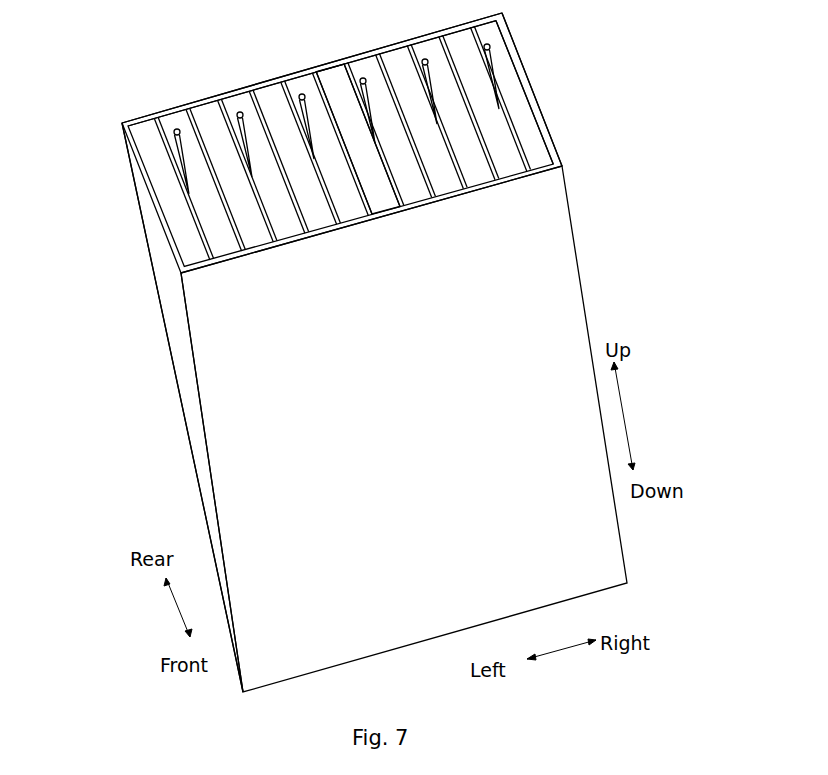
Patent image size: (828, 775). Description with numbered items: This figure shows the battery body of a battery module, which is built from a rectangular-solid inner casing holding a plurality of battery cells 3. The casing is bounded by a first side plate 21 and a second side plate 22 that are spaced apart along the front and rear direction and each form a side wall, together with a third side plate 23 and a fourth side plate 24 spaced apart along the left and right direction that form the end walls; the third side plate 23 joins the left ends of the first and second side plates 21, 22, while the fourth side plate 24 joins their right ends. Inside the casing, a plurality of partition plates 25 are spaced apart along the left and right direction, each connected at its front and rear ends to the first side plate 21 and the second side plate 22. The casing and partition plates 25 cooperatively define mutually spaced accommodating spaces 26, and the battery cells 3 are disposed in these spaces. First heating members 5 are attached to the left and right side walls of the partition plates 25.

The first side plate 21 is at (443, 603).
The second side plate 22 is at (143, 112).
The third side plate 23 is at (145, 215).
The fourth side plate 24 is at (517, 50).
The partition plate 25 is at (220, 98).
The accommodating space 26 is at (267, 79).
The battery cell 3 is at (340, 72).
The first heating member 5 is at (178, 195).